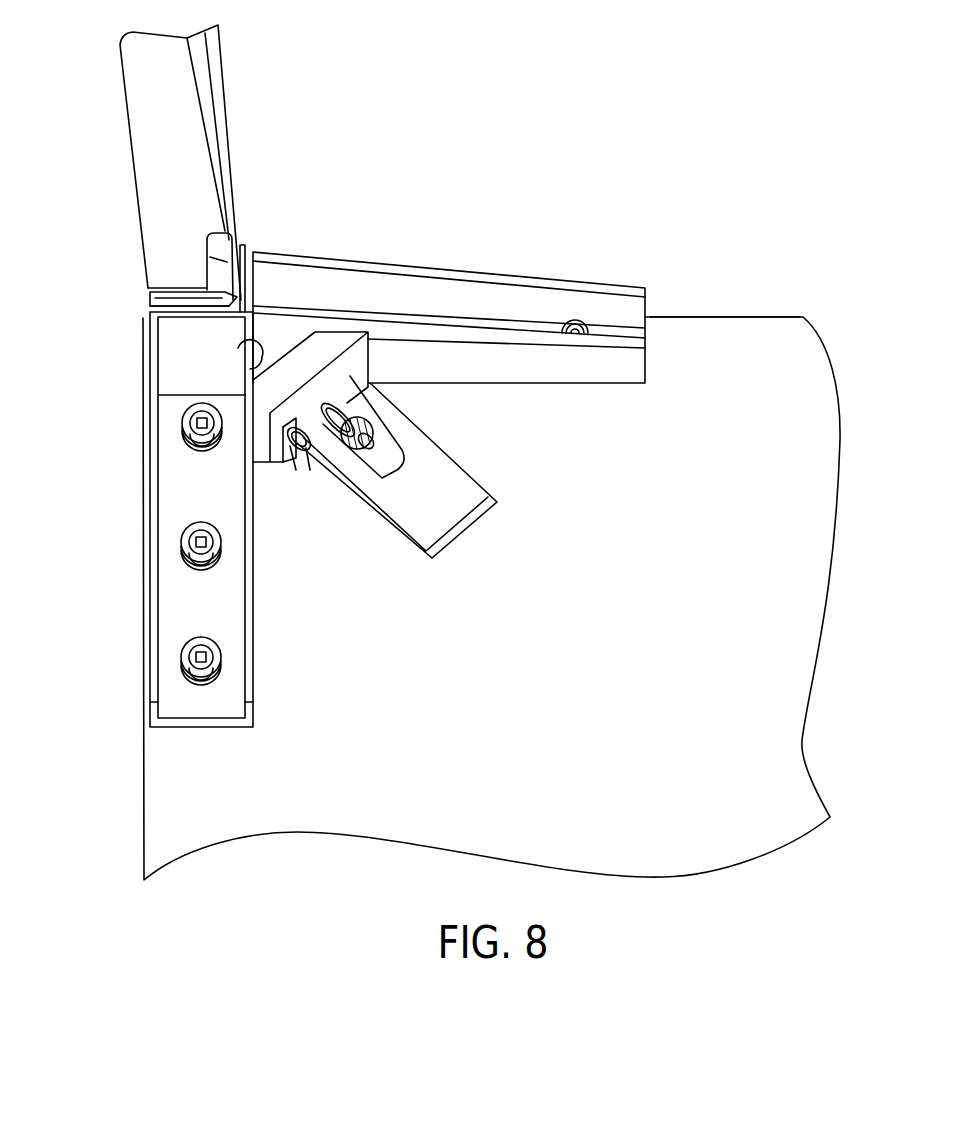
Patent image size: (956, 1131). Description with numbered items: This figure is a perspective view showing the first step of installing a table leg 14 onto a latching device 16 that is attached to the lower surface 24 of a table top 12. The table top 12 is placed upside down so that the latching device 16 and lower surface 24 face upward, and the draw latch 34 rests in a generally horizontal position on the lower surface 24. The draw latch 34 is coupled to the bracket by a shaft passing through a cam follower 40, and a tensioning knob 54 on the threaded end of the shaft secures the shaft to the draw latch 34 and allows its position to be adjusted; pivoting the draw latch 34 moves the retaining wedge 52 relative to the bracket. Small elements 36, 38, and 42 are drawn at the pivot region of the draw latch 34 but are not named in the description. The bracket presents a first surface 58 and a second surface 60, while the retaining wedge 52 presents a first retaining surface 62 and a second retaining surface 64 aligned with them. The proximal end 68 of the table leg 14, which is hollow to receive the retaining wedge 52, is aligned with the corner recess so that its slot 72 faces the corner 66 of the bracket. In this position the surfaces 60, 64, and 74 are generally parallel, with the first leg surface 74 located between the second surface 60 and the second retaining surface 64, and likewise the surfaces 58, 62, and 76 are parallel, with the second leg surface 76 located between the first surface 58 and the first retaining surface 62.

The table top 12 is at (769, 300).
The table leg 14 is at (108, 129).
The latching device 16 is at (280, 666).
The lower surface 24 is at (637, 428).
The draw latch 34 is at (438, 490).
The washer 36 is at (308, 452).
The pivot pin 38 is at (303, 457).
The cam follower 40 is at (277, 445).
The fastener 42 is at (295, 448).
The retaining wedge 52 is at (180, 302).
The tensioning knob 54 is at (372, 422).
The first surface 58 is at (153, 306).
The second surface 60 is at (254, 264).
The first retaining surface 62 is at (156, 300).
The second retaining surface 64 is at (246, 257).
The corner 66 is at (257, 304).
The proximal end 68 is at (260, 110).
The slot 72 is at (206, 243).
The first leg surface 74 is at (232, 207).
The second leg surface 76 is at (172, 258).